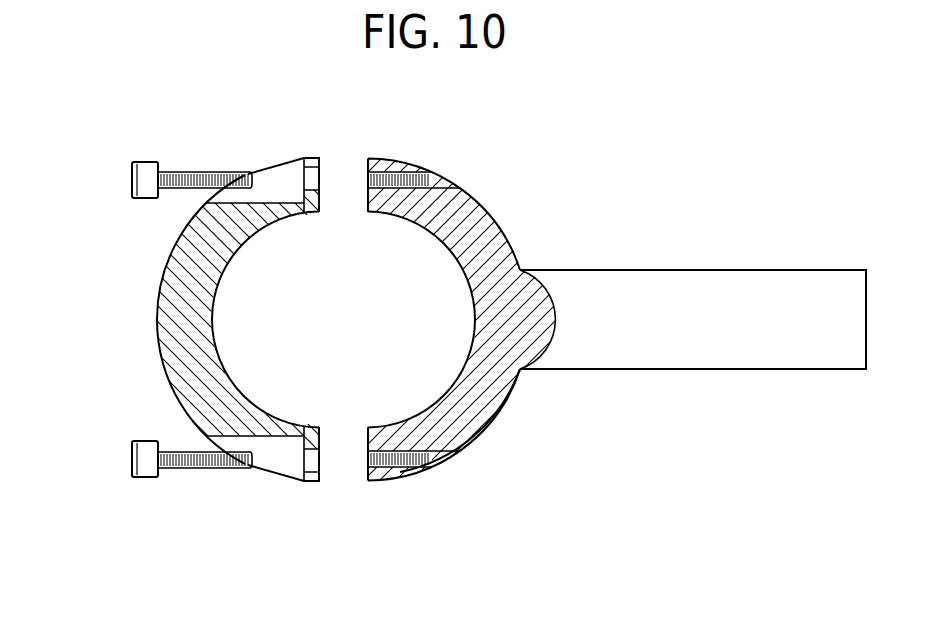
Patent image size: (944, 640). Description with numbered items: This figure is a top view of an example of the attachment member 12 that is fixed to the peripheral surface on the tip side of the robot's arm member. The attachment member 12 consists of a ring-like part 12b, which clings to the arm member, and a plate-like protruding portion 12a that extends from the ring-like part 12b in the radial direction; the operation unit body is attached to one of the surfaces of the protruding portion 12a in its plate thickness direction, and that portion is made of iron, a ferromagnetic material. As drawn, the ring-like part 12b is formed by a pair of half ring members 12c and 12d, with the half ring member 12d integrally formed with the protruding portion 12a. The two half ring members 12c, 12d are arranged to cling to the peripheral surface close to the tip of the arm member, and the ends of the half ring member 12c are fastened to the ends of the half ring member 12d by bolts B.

The attachment member 12 is at (451, 306).
The protruding portion 12a is at (698, 270).
The ring-like part 12b is at (473, 206).
The half ring member 12c is at (157, 297).
The half ring member 12d is at (500, 419).
The bolt B is at (140, 160).